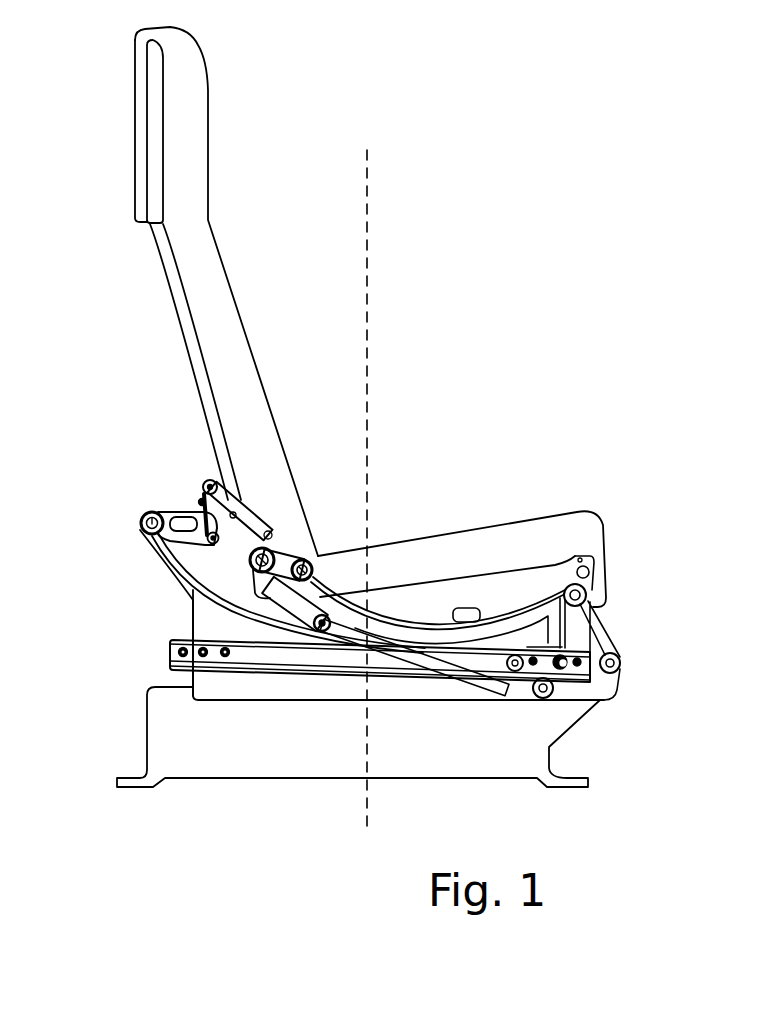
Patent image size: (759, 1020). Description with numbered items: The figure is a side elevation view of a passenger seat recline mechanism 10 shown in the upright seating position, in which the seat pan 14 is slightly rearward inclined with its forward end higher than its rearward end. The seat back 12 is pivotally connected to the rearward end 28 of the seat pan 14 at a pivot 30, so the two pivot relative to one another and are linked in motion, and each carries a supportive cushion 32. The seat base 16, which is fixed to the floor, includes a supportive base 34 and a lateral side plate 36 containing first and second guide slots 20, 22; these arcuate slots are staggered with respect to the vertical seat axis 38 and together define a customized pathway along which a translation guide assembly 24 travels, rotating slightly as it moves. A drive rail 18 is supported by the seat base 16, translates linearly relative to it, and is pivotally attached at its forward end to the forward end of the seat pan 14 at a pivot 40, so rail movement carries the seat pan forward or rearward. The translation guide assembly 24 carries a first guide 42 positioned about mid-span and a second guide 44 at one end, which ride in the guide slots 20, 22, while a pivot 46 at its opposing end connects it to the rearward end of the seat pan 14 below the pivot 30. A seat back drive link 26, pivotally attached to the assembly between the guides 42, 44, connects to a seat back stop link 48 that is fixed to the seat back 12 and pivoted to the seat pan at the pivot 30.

The seat recline mechanism 10 is at (626, 350).
The seat back 12 is at (212, 403).
The seat pan 14 is at (413, 598).
The seat base 16 is at (192, 627).
The drive rail 18 is at (253, 653).
The first guide slot 20 is at (558, 555).
The second guide slot 22 is at (145, 533).
The translation guide assembly 24 is at (167, 548).
The seat back drive link 26 is at (198, 508).
The rearward end 28 is at (349, 521).
The pivot 30 is at (316, 555).
The supportive cushion 32 is at (195, 118).
The supportive base 34 is at (163, 756).
The lateral side plate 36 is at (204, 690).
The vertical seat axis 38 is at (378, 188).
The pivot 40 is at (585, 608).
The first guide 42 is at (183, 572).
The second guide 44 is at (157, 511).
The pivot 46 is at (323, 631).
The seat back stop link 48 is at (233, 503).